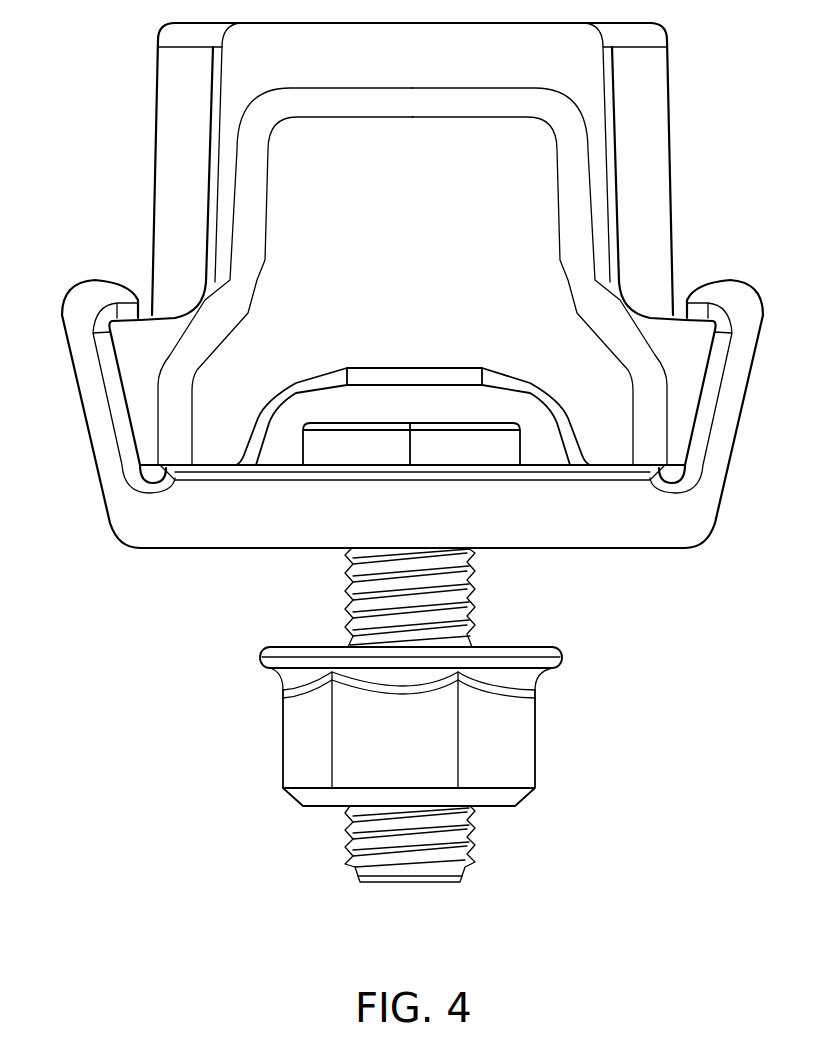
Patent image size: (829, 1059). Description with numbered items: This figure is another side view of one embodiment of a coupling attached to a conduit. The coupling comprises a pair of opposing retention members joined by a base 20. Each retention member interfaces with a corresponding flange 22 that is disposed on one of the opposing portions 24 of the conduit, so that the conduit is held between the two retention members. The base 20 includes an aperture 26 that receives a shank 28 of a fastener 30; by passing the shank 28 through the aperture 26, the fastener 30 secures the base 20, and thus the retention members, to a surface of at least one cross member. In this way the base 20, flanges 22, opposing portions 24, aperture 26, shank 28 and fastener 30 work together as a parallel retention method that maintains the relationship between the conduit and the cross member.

The base 20 is at (187, 552).
The flange 22 is at (352, 190).
The opposing portions of the conduit 24 is at (137, 350).
The aperture 26 is at (473, 551).
The shank 28 is at (410, 883).
The fastener 30 is at (340, 838).